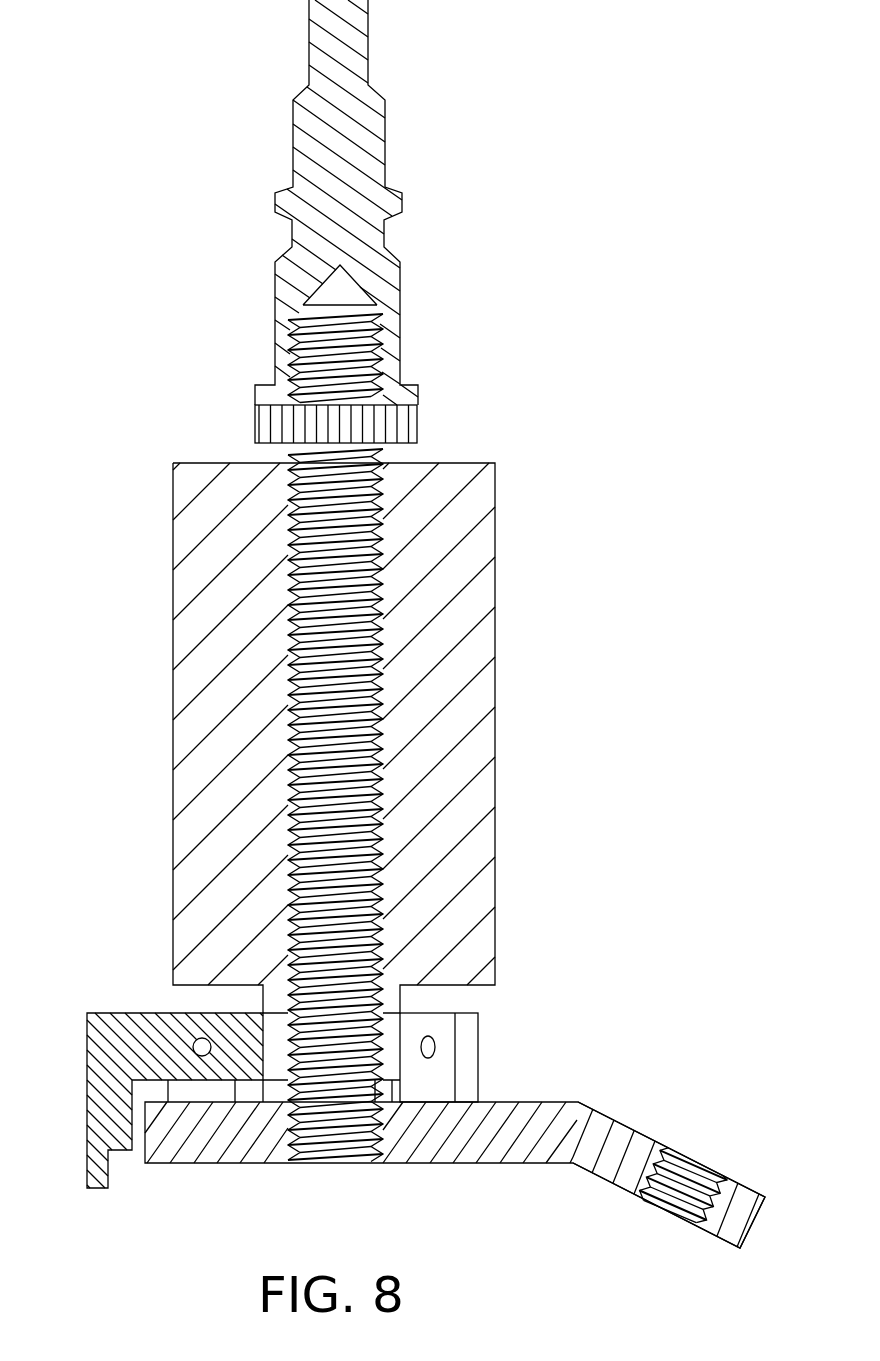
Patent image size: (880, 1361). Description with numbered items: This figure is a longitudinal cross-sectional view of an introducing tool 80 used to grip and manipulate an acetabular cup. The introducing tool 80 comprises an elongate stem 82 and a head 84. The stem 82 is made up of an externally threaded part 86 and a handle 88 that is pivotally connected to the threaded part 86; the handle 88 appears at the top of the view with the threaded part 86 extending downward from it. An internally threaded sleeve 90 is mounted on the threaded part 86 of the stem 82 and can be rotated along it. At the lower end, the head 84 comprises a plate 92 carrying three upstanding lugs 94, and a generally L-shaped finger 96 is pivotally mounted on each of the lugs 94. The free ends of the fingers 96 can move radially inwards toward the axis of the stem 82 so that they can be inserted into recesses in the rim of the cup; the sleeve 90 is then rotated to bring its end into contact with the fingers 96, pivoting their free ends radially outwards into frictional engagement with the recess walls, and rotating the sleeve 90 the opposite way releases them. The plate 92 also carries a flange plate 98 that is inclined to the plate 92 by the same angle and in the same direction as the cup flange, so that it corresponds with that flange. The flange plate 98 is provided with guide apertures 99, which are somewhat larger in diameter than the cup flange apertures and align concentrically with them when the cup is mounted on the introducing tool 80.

The introducing tool 80 is at (625, 566).
The elongate stem 82 is at (442, 408).
The head 84 is at (545, 1082).
The externally threaded part 86 is at (287, 647).
The handle 88 is at (385, 147).
The internally threaded sleeve 90 is at (497, 776).
The plate 92 is at (455, 1164).
The upstanding lugs 94 is at (207, 1095).
The L-shaped finger 96 is at (87, 1013).
The flange plate 98 is at (623, 1122).
The guide apertures 99 is at (703, 1162).